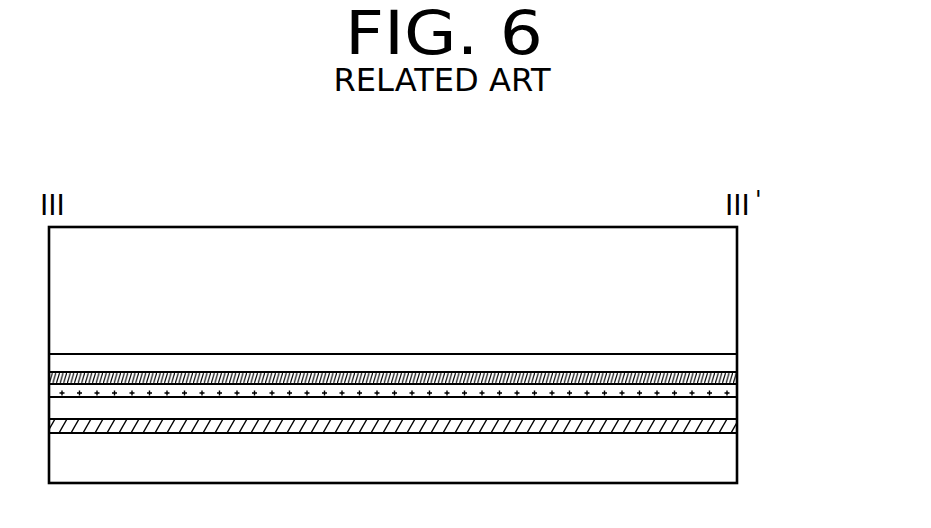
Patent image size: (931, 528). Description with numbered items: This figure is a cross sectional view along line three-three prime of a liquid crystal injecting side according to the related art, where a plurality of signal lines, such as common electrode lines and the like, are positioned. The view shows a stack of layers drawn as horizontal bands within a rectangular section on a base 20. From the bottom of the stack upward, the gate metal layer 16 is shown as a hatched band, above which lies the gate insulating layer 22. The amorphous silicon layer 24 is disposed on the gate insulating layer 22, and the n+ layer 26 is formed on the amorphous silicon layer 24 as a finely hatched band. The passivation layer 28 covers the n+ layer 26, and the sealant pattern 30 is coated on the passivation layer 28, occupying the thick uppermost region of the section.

The gate metal layer 16 is at (737, 430).
The substrate 20 is at (725, 460).
The gate insulating layer 22 is at (725, 408).
The amorphous silicon layer 24 is at (728, 391).
The n+ layer 26 is at (737, 378).
The passivation layer 28 is at (727, 357).
The sealant pattern 30 is at (727, 293).